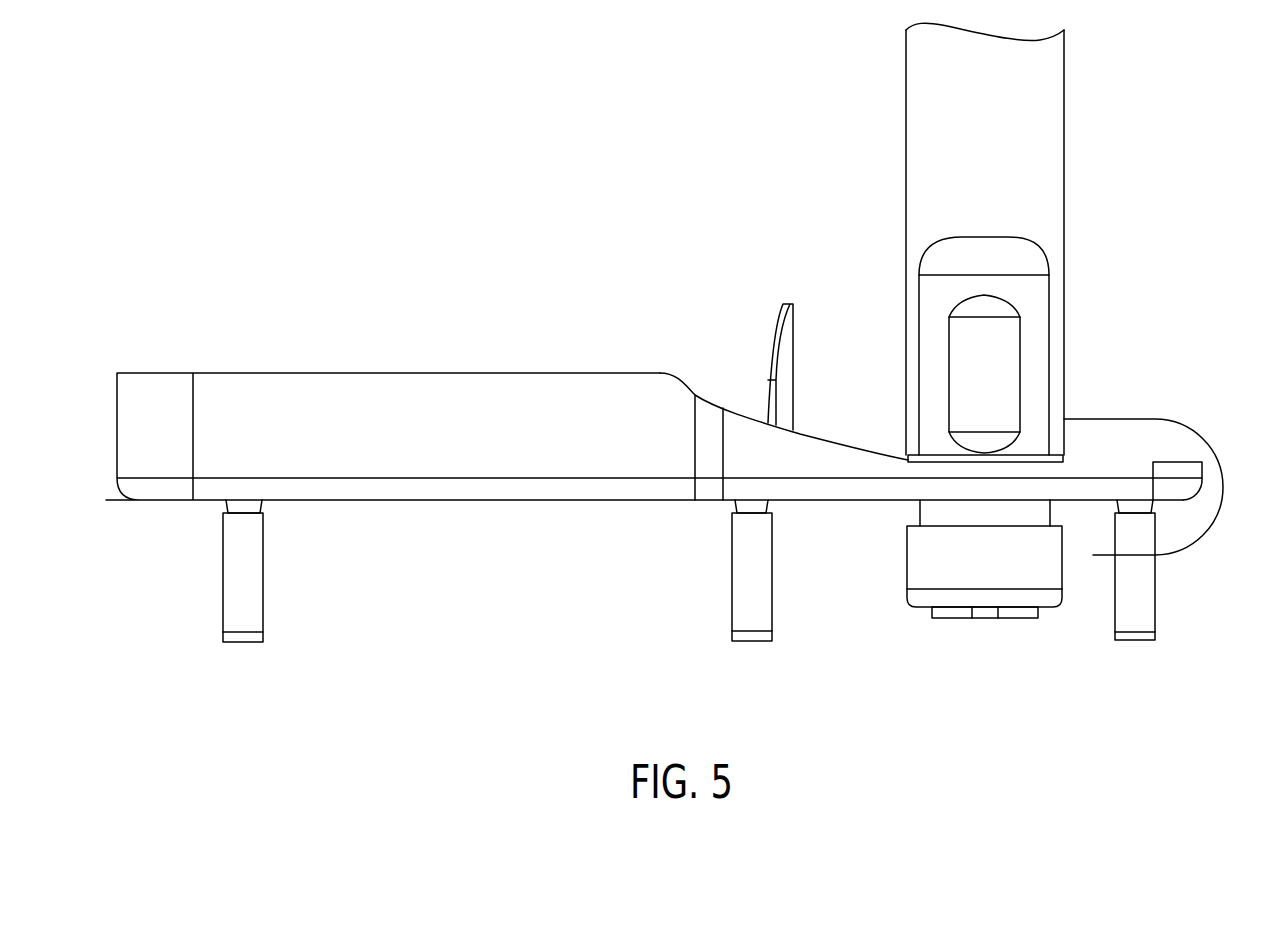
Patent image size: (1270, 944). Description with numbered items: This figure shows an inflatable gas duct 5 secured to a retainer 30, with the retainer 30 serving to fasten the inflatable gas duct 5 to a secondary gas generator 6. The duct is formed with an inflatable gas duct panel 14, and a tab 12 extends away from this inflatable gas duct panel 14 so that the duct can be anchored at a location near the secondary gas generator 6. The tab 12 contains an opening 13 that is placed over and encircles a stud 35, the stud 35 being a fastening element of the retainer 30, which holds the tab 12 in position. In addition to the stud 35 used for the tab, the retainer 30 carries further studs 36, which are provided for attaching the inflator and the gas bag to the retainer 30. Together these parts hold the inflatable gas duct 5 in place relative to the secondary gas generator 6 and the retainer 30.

The inflatable gas duct 5 is at (922, 120).
The secondary gas generator 6 is at (920, 548).
The tab 12 is at (1200, 433).
The opening 13 is at (1133, 557).
The inflatable gas duct panel 14 is at (1040, 120).
The retainer 30 is at (359, 390).
The stud 35 is at (1103, 668).
The studs 36 is at (282, 592).